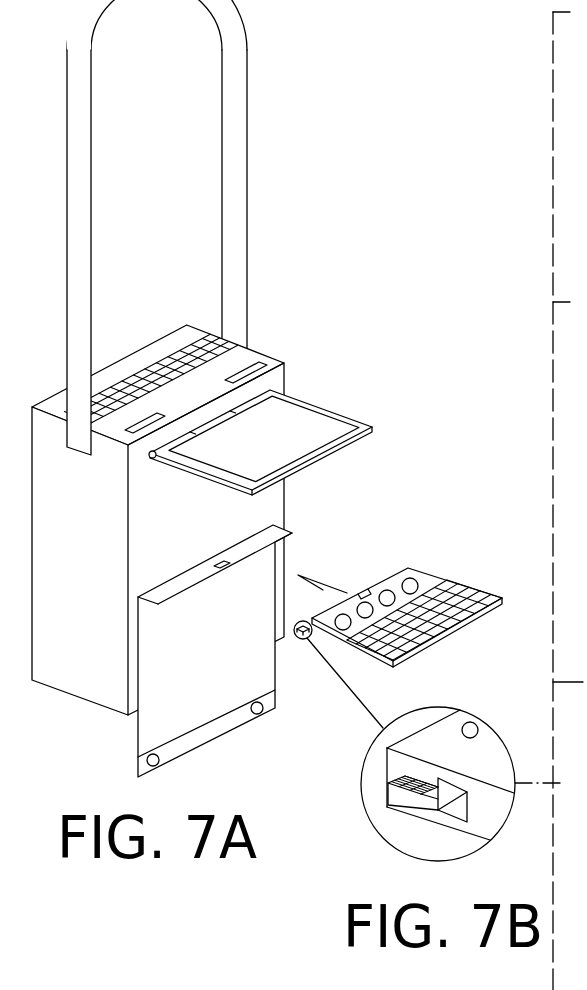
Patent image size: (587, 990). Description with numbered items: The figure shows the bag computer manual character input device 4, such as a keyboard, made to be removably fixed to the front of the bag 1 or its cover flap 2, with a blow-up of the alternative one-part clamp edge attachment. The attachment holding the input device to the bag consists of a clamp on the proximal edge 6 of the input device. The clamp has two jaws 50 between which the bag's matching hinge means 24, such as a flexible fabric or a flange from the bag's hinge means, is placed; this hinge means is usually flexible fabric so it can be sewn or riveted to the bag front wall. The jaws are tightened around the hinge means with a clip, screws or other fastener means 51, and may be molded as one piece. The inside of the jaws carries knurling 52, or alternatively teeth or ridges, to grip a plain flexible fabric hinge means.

In FIG. 7A, the bag 1 is at (277, 378).
In FIG. 7A, the proximal edge 6 is at (378, 580).
In FIG. 7A, the hinge means 24 is at (190, 578).
In FIG. 7B, the jaws 50 is at (405, 800).
In FIG. 7B, the fastener means 51 is at (471, 729).
In FIG. 7B, the knurling 52 is at (423, 797).
In FIG. 7A, the bag computer manual character input device 4 is at (576, 83).
In FIG. 7A, the cover flap 2 is at (576, 383).